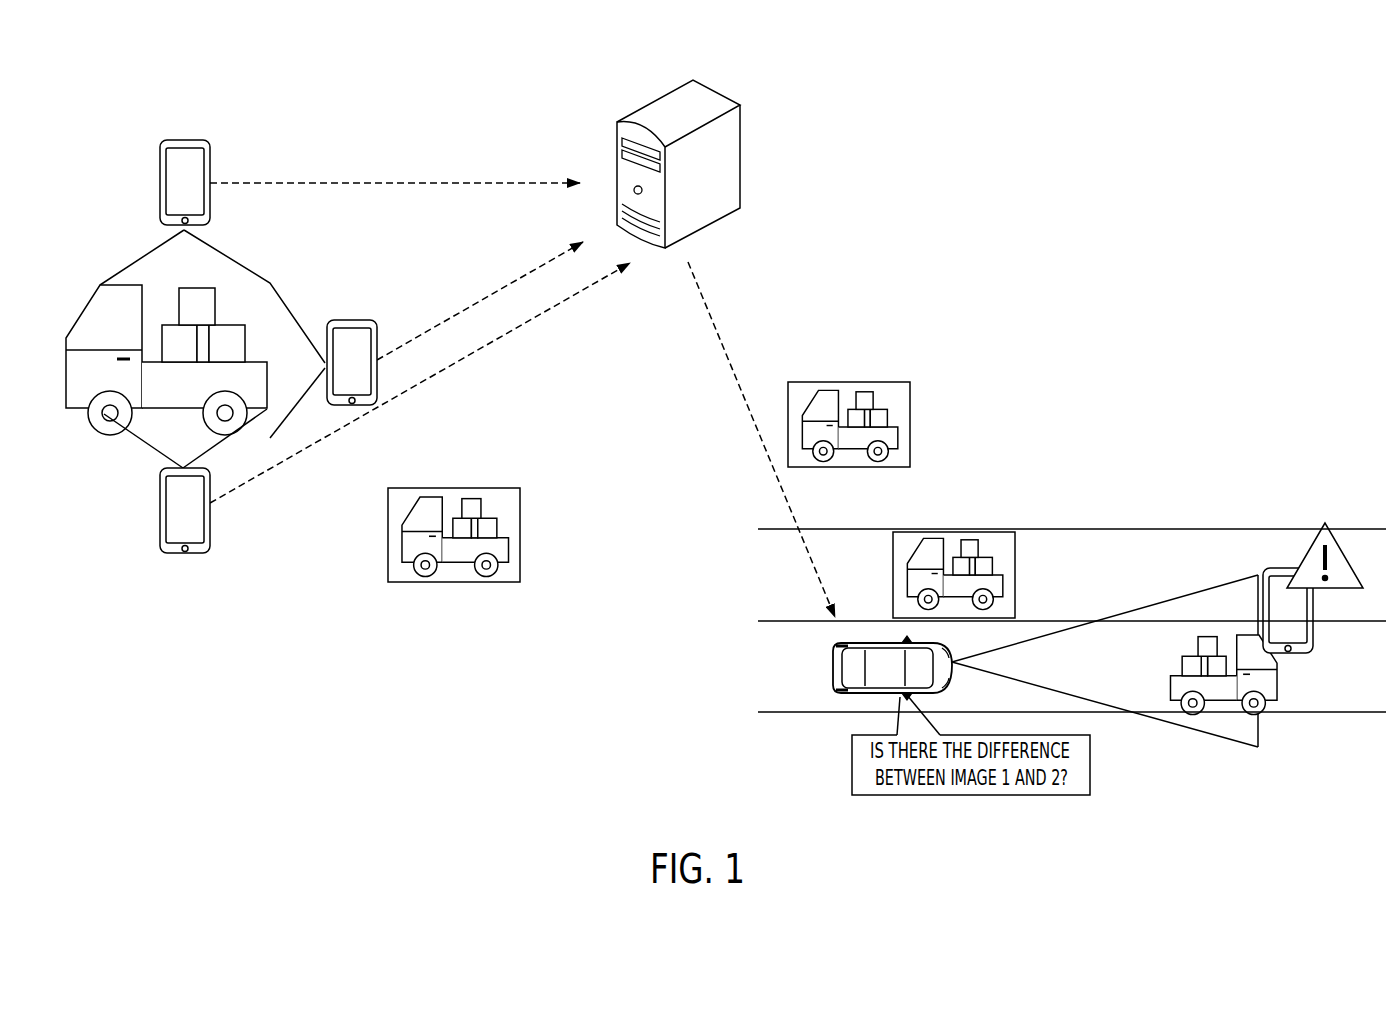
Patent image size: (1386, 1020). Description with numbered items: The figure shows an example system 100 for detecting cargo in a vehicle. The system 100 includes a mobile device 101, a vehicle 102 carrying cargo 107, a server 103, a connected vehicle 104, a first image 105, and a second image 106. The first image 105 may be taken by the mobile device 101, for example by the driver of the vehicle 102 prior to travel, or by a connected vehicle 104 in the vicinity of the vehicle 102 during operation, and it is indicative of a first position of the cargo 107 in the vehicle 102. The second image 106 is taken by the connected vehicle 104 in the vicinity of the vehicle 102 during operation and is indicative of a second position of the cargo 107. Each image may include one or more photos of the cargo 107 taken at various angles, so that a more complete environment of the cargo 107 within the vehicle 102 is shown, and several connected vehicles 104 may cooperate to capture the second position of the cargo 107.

The system 100 is at (1058, 215).
The mobile device 101 is at (186, 139).
The vehicle 102 is at (84, 310).
The server 103 is at (713, 91).
The connected vehicle 104 is at (833, 668).
The first image 105 is at (455, 487).
The second image 106 is at (955, 531).
The cargo 107 is at (228, 325).